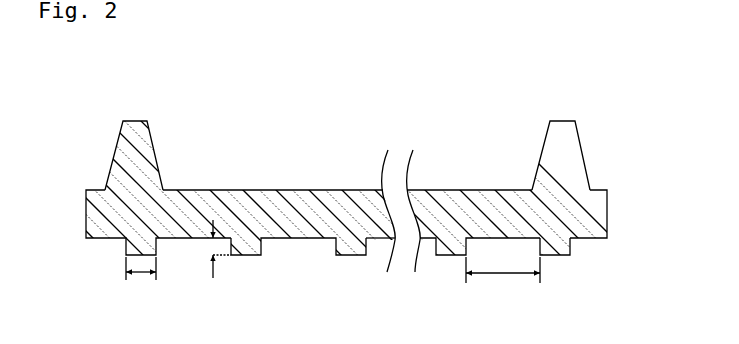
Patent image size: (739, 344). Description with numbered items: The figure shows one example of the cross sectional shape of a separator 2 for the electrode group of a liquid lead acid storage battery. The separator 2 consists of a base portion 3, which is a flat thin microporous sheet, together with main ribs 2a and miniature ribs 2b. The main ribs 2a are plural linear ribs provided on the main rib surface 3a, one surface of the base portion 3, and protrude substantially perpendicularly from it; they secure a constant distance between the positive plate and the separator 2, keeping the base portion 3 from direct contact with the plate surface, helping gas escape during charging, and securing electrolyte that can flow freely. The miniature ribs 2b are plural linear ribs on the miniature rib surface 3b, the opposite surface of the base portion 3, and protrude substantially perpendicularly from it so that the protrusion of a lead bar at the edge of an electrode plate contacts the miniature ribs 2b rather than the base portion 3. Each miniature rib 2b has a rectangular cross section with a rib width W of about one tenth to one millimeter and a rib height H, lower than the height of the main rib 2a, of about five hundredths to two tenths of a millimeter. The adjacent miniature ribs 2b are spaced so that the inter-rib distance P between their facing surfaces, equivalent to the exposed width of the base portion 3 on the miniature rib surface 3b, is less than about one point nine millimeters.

The separator 2 is at (462, 186).
The main ribs 2a is at (568, 150).
The miniature ribs 2b is at (570, 250).
The base portion 3 is at (262, 198).
The main rib surface 3a is at (200, 190).
The miniature rib surface 3b is at (283, 239).
The rib width W is at (142, 278).
The rib height H is at (208, 247).
The inter-rib distance P is at (505, 277).